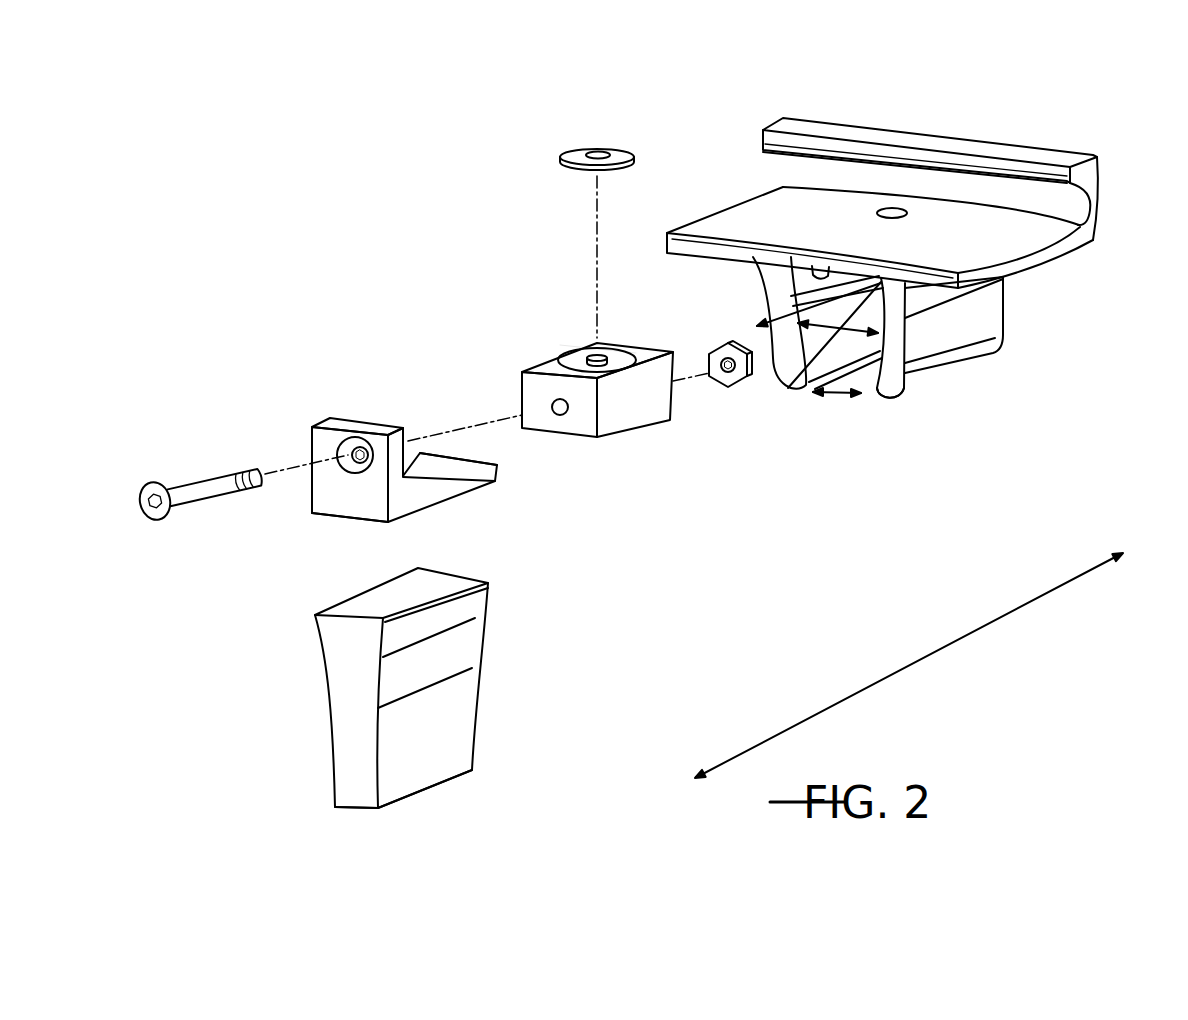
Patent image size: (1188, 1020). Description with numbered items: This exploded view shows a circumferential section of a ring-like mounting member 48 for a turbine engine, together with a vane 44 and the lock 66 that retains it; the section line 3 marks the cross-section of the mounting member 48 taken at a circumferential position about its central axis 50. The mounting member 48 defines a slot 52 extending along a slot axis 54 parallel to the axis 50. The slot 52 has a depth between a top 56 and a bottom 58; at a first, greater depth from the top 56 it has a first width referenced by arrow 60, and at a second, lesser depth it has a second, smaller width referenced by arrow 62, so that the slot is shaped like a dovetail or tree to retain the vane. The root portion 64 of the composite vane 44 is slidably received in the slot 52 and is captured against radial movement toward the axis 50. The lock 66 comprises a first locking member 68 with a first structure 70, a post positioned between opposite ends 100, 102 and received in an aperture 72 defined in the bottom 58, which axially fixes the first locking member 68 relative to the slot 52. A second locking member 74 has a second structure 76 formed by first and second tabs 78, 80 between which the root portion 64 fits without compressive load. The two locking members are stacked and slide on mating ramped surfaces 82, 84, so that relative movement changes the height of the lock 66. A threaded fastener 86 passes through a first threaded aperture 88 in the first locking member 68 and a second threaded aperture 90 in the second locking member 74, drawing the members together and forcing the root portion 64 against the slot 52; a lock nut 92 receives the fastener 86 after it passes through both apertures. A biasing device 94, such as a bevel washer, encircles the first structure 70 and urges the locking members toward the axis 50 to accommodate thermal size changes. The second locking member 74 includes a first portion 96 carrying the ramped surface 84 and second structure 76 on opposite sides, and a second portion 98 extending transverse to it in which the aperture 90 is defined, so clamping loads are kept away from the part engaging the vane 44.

The section line 3- 3 is at (907, 110).
The vane 44 is at (294, 802).
The mounting member 48 is at (1023, 106).
The central axis 50 is at (1037, 602).
The slot 52 is at (803, 285).
The slot axis 54 is at (1105, 214).
The top 56 is at (868, 398).
The bottom 58 is at (814, 268).
The arrow (first width) 60 is at (783, 398).
The arrow (second width) 62 is at (838, 397).
The root portion 64 is at (347, 630).
The lock 66 is at (185, 333).
The first locking member 68 is at (542, 322).
The first structure 70 is at (596, 359).
The aperture 72 is at (898, 211).
The second locking member 74 is at (348, 392).
The second structure 76 is at (514, 502).
The first tab 78 is at (393, 523).
The second tab 80 is at (494, 481).
The ramped surface 82 is at (624, 431).
The ramped surface 84 is at (422, 470).
The threaded fastener 86 is at (157, 474).
The first threaded aperture 88 is at (550, 408).
The second threaded aperture 90 is at (347, 453).
The lock nut 92 is at (732, 392).
The biasing device 94 is at (628, 140).
The first portion 96 is at (470, 478).
The second portion 98 is at (408, 440).
The end 100 is at (590, 434).
The end 102 is at (683, 372).